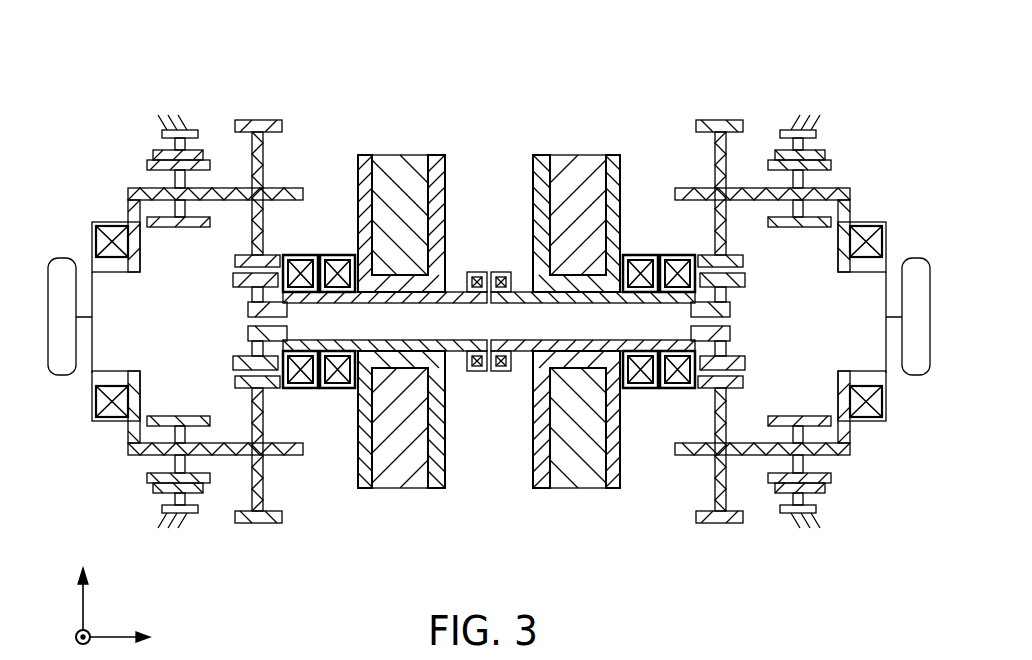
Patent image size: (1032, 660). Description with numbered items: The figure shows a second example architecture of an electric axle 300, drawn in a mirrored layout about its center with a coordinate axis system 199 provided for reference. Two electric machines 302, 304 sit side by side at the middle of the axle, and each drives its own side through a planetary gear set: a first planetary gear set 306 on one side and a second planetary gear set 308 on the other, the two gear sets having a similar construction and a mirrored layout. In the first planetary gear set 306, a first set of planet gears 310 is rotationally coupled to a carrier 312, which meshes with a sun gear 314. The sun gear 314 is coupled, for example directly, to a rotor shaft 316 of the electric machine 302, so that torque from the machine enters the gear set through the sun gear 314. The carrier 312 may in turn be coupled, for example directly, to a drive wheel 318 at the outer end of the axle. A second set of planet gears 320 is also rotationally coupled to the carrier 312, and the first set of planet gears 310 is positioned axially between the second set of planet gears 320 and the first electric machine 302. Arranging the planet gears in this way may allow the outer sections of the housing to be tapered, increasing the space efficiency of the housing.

The electric axle 300 is at (484, 265).
The electric machine 302 is at (403, 143).
The electric machine 304 is at (578, 143).
The first planetary gear set 306 is at (204, 273).
The second planetary gear set 308 is at (722, 107).
The first set of planet gears 310 is at (273, 125).
The carrier 312 is at (298, 193).
The sun gear 314 is at (233, 278).
The rotor shaft 316 is at (253, 310).
The drive wheel 318 is at (62, 258).
The second set of planet gears 320 is at (153, 165).
The coordinate axis system 199 is at (95, 628).